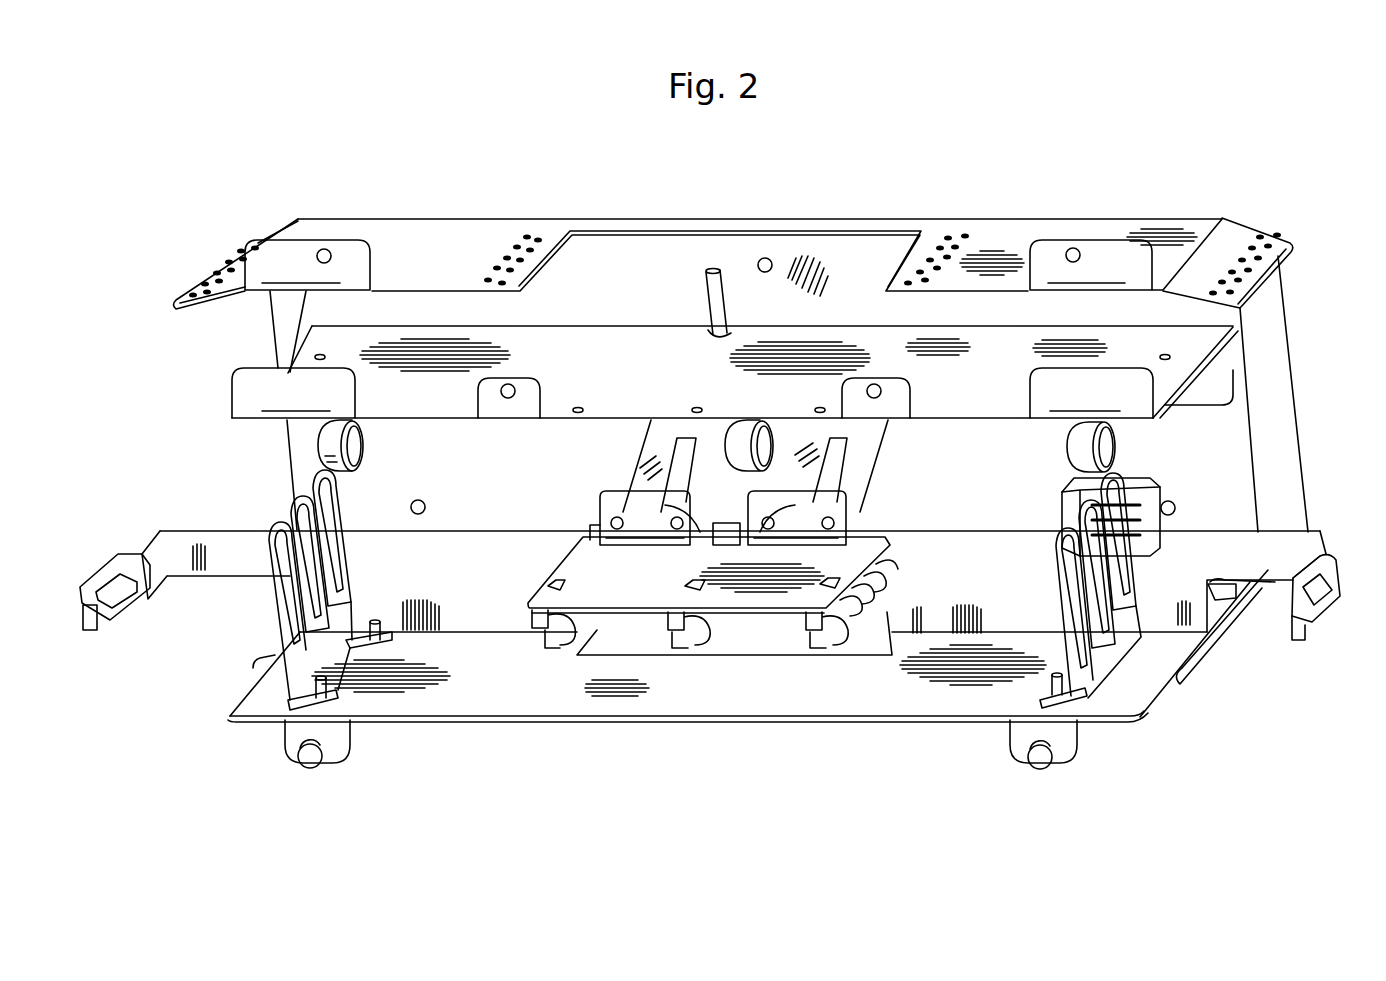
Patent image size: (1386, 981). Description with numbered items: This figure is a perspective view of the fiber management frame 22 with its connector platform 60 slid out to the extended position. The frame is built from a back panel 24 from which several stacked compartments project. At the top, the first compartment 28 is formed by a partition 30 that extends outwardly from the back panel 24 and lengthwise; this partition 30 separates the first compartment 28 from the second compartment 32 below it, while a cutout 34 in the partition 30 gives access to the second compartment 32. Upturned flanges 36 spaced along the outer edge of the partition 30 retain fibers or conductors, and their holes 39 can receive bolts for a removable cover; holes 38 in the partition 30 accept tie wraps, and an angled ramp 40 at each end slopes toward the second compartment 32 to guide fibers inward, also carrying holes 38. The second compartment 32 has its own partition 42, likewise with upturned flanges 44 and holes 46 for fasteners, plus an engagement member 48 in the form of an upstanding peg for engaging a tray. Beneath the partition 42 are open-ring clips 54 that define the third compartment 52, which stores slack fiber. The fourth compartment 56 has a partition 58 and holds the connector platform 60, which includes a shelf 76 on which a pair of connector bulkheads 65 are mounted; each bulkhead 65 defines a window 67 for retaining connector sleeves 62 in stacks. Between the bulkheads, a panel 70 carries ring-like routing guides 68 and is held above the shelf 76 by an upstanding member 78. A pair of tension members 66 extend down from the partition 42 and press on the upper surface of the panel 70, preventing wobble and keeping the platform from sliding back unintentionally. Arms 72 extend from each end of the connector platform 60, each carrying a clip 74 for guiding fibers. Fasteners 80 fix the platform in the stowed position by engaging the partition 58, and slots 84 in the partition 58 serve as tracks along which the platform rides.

The fiber management frame 22 is at (900, 148).
The back panel 24 is at (1228, 428).
The first compartment 28 is at (1105, 226).
The partition 30 is at (423, 232).
The second compartment 32 is at (1155, 345).
The cutout 34 is at (612, 258).
The upturned flanges 36 is at (287, 255).
The holes 38 is at (528, 237).
The holes 39 is at (326, 250).
The angled ramp 40 is at (272, 222).
The partition 42 is at (350, 342).
The upturned flanges 44 is at (248, 390).
The holes 46 is at (314, 357).
The engagement member 48 is at (722, 280).
The third compartment 52 is at (304, 442).
The clips 54 is at (356, 448).
The fourth compartment 56 is at (1216, 493).
The partition 58 is at (1205, 652).
The connector platform 60 is at (893, 723).
The connector sleeves 62 is at (1150, 489).
The connector bulkhead 65 is at (1062, 590).
The tension members 66 is at (653, 443).
The window 67 is at (278, 625).
The routing guides 68 is at (680, 648).
The panel 70 is at (618, 583).
The arms 72 is at (235, 555).
The clip 74 is at (95, 575).
The shelf 76 is at (872, 701).
The upstanding member 78 is at (738, 642).
The fasteners 80 is at (313, 763).
The slots 84 is at (1222, 598).